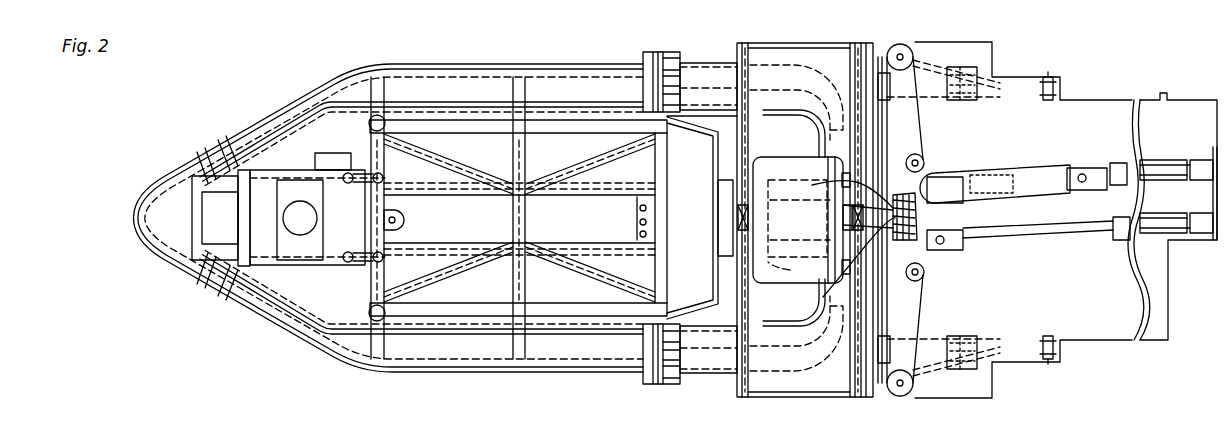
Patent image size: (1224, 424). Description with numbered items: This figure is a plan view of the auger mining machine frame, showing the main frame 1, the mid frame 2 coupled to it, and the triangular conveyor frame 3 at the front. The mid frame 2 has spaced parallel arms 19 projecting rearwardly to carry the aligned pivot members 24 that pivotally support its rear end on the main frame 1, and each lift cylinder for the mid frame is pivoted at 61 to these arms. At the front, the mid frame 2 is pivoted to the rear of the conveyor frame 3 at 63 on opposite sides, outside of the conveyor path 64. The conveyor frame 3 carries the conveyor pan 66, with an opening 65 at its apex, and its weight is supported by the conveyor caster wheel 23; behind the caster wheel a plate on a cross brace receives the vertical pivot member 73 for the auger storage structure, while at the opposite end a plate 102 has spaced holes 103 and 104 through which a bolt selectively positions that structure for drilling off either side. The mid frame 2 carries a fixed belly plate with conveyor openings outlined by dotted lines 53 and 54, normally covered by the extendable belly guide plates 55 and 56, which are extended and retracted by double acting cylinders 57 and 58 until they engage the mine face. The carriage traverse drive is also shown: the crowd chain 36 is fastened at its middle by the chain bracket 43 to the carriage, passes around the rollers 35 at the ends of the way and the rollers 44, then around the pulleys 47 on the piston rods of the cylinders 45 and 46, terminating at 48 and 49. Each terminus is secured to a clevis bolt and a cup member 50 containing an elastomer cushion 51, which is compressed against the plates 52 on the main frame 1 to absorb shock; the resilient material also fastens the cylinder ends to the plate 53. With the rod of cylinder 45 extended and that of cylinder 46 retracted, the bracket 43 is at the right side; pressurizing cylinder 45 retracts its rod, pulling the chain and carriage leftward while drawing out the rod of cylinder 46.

The main frame 1 is at (1098, 112).
The mid frame 2 is at (705, 368).
The conveyor frame 3 is at (213, 285).
The spaced parallel arms 19 is at (1000, 82).
The conveyor caster wheel 23 is at (298, 222).
The pivot members 24 is at (1048, 72).
The pulleys 35 is at (905, 47).
The crowd feed chain 36 is at (910, 114).
The chain bracket 43 is at (882, 52).
The rollers 44 is at (924, 158).
The cylinder 45 is at (1120, 240).
The cylinder 46 is at (1118, 185).
The pulley 47 is at (1082, 168).
The chain terminus 48 is at (935, 252).
The chain terminus 49 is at (920, 170).
The cup member 50 is at (826, 292).
The elastomer cushion 51 is at (1203, 182).
The plates 52 is at (818, 216).
The plate 53 is at (1215, 242).
The conveyor opening 54 is at (784, 85).
The extendable belly guide plate 55 is at (775, 390).
The extendable belly guide plate 56 is at (800, 28).
The double acting cylinder 57 is at (818, 242).
The double acting cylinder 58 is at (822, 196).
The pivot 61 is at (970, 67).
The pivot 63 is at (663, 47).
The conveyor path 64 is at (600, 82).
The opening 65 is at (193, 165).
The conveyor pan 66 is at (458, 82).
The vertical pivot member 73 is at (404, 218).
The plate 102 is at (640, 207).
The hole 103 is at (640, 221).
The hole 104 is at (640, 234).